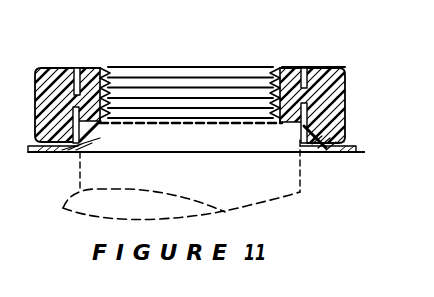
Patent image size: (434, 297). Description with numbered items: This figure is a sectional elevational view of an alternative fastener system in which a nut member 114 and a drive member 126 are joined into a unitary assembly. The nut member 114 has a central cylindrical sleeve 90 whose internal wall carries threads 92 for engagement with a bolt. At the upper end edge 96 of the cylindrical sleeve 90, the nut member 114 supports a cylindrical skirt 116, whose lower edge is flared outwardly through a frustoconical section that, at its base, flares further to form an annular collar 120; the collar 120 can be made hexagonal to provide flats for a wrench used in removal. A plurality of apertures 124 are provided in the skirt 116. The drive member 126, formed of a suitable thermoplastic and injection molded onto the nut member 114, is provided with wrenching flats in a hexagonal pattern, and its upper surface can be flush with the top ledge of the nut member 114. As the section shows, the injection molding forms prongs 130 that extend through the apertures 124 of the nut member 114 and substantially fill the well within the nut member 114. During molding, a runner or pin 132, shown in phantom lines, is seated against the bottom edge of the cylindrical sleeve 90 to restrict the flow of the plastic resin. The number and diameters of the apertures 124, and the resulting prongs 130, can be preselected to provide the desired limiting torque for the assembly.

The central cylindrical sleeve 90 is at (110, 70).
The threads 92 is at (113, 82).
The upper end edge 96 is at (275, 67).
The cylindrical skirt 116 is at (334, 107).
The apertures 124 is at (345, 68).
The drive member 126 is at (333, 62).
The prongs 130 is at (298, 117).
The nut member 114 is at (174, 146).
The annular collar 120 is at (364, 152).
The pin 132 is at (98, 208).